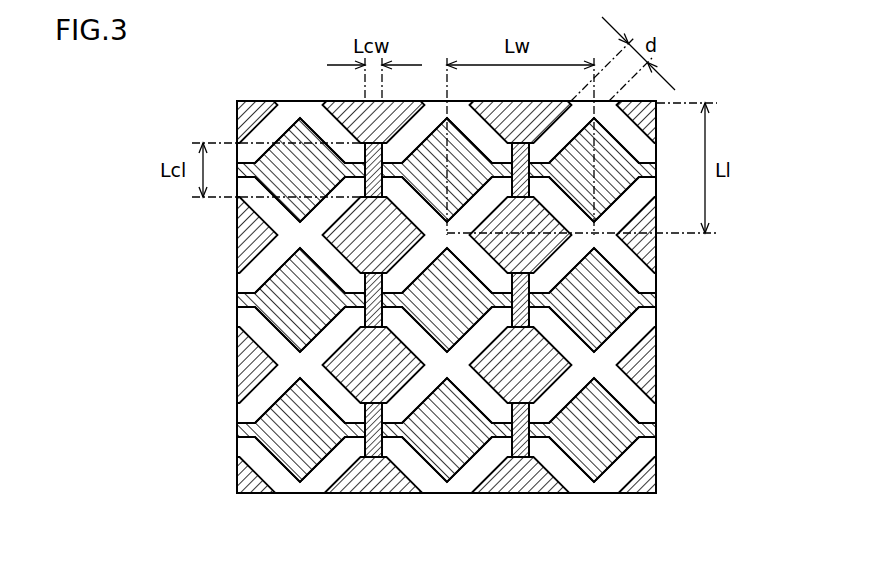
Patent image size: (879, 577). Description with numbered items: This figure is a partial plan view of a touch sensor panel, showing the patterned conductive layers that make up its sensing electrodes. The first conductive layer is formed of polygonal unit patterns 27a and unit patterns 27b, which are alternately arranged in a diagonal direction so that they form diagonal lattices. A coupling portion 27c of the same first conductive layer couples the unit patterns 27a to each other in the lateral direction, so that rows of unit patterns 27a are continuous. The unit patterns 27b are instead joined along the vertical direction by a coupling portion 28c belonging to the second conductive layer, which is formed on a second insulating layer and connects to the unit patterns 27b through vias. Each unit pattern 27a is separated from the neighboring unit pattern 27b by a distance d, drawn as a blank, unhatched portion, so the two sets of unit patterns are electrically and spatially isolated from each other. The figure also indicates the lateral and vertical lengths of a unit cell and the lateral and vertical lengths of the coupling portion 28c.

The unit pattern 27a is at (280, 453).
The unit pattern 27b is at (337, 493).
The coupling portion 27c is at (390, 428).
The coupling portion 28c is at (373, 456).